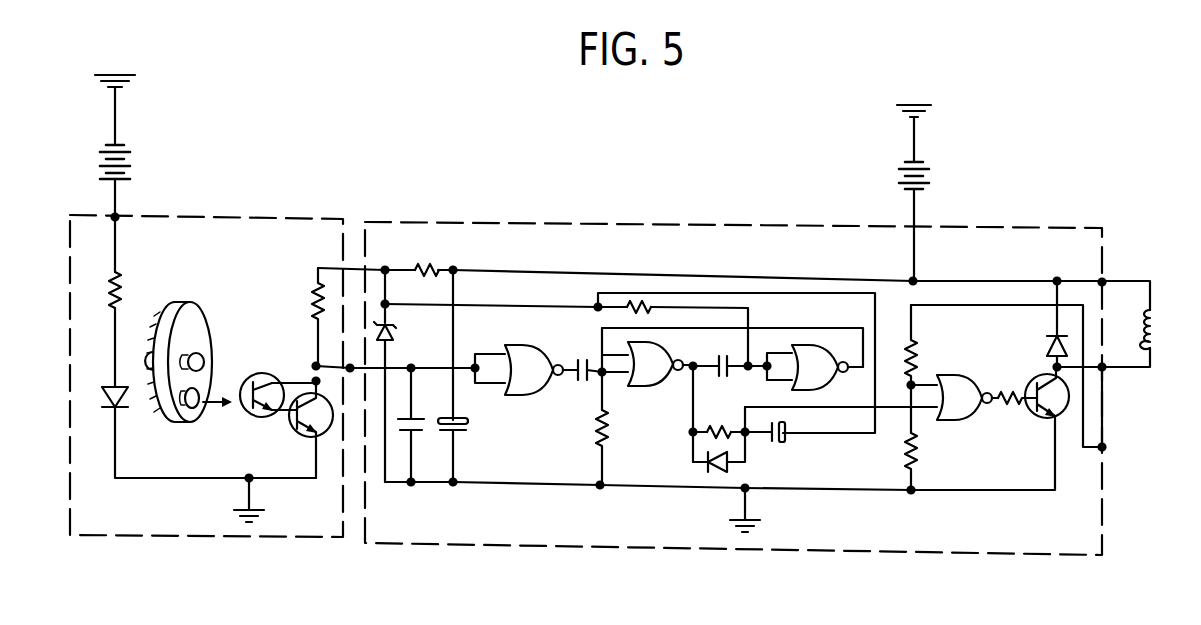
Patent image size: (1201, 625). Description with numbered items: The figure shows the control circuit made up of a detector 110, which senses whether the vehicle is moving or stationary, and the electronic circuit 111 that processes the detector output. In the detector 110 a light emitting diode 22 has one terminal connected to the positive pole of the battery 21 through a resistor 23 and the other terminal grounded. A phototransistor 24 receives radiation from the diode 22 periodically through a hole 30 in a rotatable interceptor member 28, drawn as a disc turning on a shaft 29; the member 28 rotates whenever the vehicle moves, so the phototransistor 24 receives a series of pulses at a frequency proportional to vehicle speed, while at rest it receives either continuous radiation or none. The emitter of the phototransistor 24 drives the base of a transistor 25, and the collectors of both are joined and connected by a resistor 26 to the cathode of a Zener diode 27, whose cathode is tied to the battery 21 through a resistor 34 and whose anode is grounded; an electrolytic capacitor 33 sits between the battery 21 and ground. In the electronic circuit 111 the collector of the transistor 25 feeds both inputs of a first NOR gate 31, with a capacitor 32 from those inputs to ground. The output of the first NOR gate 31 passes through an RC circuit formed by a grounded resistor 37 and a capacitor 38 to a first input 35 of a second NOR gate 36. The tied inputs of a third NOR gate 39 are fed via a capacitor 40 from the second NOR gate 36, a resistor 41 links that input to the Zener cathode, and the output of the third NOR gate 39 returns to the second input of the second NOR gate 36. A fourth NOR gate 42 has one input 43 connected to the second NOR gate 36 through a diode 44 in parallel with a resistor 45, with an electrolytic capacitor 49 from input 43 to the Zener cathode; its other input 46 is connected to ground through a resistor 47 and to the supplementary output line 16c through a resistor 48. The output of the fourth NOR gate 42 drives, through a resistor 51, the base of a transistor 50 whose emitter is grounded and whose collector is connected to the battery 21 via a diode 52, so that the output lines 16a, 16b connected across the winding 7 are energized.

The winding 7 is at (1144, 326).
The output line 16a is at (1106, 281).
The output line 16b is at (1106, 369).
The supplementary output line 16c is at (1106, 447).
The battery 21 is at (145, 155).
The light emitting diode 22 is at (126, 394).
The resistor 23 is at (122, 286).
The phototransistor 24 is at (266, 374).
The transistor 25 is at (291, 430).
The resistor 26 is at (314, 292).
The Zener diode 27 is at (409, 336).
The rotatable interceptor member 28 is at (196, 320).
The shaft 29 is at (204, 360).
The hole 30 is at (194, 409).
The first NOR gate 31 is at (537, 346).
The capacitor 32 is at (421, 425).
The electrolytic capacitor 33 is at (490, 440).
The resistor 34 is at (432, 264).
The first input 35 is at (612, 378).
The second NOR gate 36 is at (660, 388).
The resistor 37 is at (610, 430).
The capacitor 38 is at (578, 382).
The third NOR gate 39 is at (818, 346).
The capacitor 40 is at (718, 357).
The resistor 41 is at (650, 300).
The fourth NOR gate 42 is at (972, 382).
The input 43 is at (923, 410).
The diode 44 is at (733, 468).
The resistor 45 is at (718, 427).
The other input 46 is at (962, 393).
The resistor 47 is at (917, 452).
The resistor 48 is at (916, 352).
The electrolytic capacitor 49 is at (788, 438).
The transistor 50 is at (1040, 420).
The resistor 51 is at (1006, 405).
The diode 52 is at (1044, 342).
The detector 110 is at (218, 216).
The electronic circuit 111 is at (738, 225).